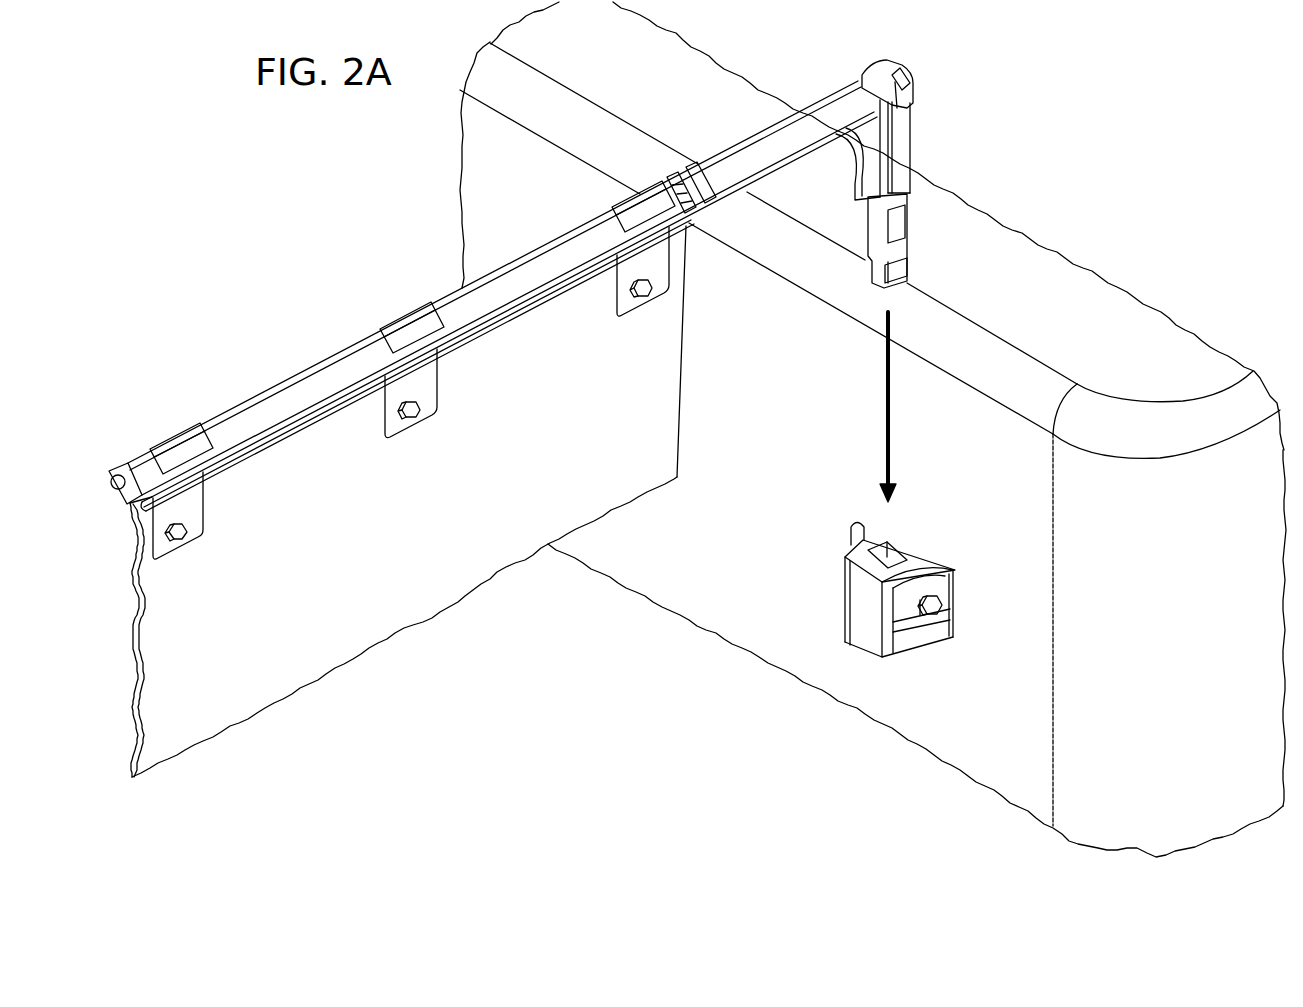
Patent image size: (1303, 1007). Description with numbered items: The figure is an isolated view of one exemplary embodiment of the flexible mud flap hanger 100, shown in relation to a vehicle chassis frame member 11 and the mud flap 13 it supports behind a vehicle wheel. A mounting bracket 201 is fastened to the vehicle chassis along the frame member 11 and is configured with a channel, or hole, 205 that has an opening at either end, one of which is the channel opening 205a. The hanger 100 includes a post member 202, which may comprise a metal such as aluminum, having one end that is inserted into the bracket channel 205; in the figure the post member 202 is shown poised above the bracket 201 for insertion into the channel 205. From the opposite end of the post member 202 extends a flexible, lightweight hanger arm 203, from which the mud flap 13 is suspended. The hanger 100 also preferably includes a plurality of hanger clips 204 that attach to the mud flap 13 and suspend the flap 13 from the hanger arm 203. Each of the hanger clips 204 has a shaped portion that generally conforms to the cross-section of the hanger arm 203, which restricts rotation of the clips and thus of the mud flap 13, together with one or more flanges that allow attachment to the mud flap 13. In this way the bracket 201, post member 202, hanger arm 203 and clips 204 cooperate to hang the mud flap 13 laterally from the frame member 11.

The mud flap hanger 100 is at (546, 309).
The frame member 11 is at (778, 449).
The mud flap 13 is at (451, 518).
The mounting bracket 201 is at (854, 599).
The post member 202 is at (921, 142).
The hanger arm 203 is at (517, 259).
The hanger clips 204 is at (403, 332).
The channel 205 is at (898, 553).
The channel opening 205a is at (849, 521).